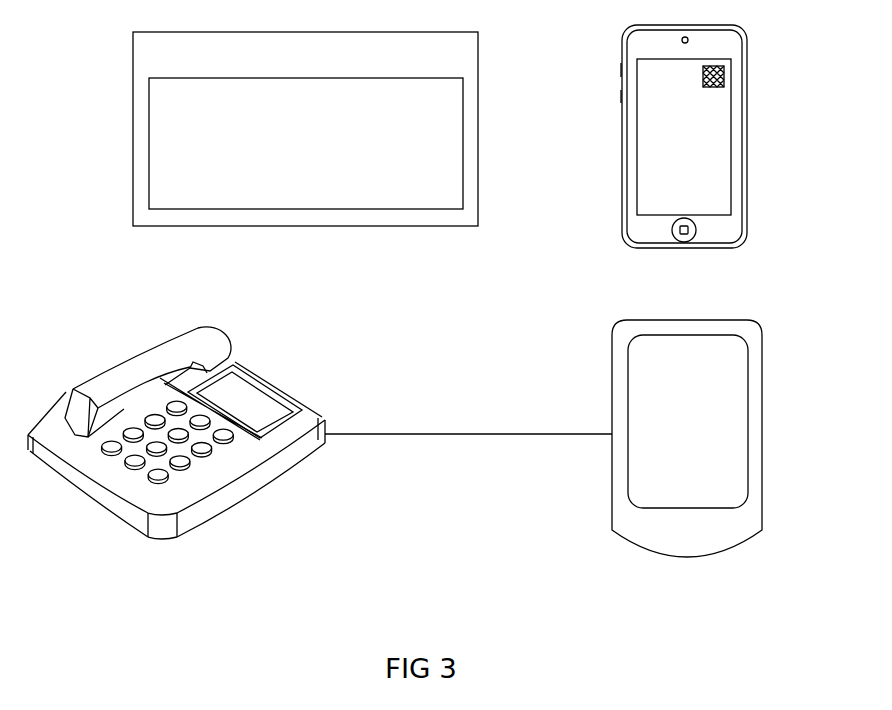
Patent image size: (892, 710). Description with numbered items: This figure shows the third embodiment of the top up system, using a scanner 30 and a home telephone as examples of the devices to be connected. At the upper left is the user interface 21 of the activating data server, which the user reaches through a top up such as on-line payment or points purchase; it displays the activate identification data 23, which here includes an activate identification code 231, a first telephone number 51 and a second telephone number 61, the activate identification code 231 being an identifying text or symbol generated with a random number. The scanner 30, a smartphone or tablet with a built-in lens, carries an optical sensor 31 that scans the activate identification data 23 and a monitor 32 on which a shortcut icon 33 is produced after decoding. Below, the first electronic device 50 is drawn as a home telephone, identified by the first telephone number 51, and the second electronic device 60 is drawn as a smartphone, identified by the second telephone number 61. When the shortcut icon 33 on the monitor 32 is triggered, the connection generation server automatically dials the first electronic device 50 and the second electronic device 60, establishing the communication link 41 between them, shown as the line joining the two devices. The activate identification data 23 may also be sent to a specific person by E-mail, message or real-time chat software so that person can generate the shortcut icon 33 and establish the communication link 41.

The user interface 21 is at (478, 62).
The activate identification data 23 is at (463, 142).
The activate identification code 231 is at (168, 102).
The first telephone number 51 is at (167, 140).
The second telephone number 61 is at (167, 180).
The scanner 30 is at (747, 207).
The optical sensor 31 is at (688, 38).
The monitor 32 is at (731, 157).
The shortcut icon 33 is at (724, 76).
The first electronic device 50 is at (253, 491).
The communication link 41 is at (455, 435).
The second electronic device 60 is at (750, 548).